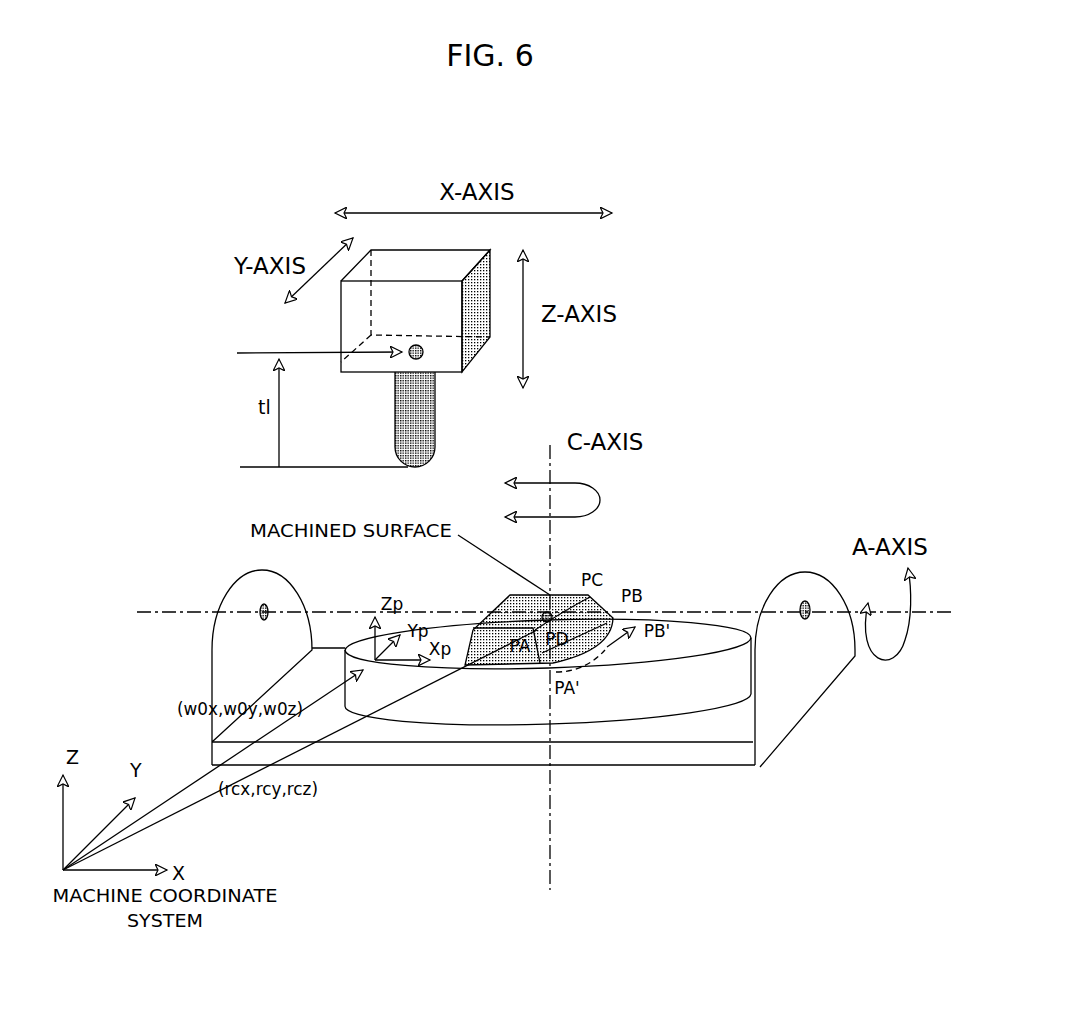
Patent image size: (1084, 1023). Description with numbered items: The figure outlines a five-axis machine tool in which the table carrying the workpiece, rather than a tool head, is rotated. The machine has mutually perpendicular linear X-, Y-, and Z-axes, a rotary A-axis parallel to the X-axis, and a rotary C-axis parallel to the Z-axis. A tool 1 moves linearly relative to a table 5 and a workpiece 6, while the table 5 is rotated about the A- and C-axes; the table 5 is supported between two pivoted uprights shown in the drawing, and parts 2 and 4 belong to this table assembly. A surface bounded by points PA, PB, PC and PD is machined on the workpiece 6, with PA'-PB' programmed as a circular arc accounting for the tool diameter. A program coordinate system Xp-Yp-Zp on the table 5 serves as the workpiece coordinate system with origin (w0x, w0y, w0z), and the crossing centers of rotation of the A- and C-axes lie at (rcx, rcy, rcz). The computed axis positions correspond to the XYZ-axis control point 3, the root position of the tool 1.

The tool 1 is at (435, 425).
The table 2 is at (692, 622).
The XYZ-axis control point 3 is at (402, 350).
The rotary table 4 is at (597, 667).
The table 5 is at (667, 698).
The workpiece 6 is at (566, 596).